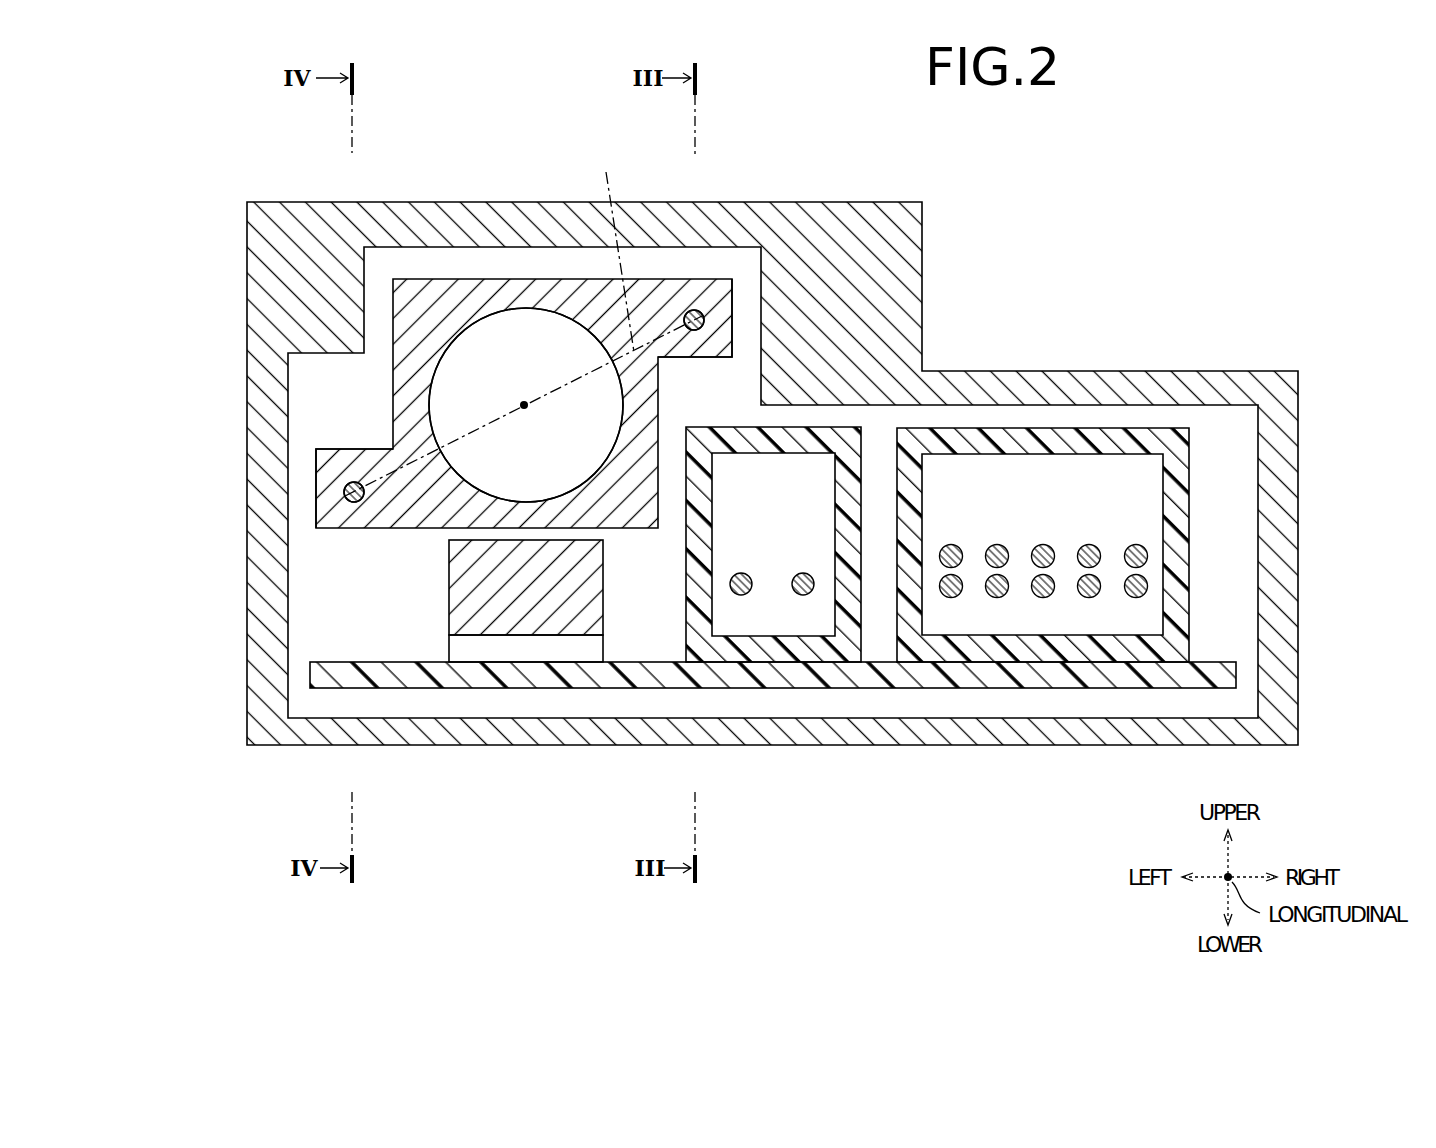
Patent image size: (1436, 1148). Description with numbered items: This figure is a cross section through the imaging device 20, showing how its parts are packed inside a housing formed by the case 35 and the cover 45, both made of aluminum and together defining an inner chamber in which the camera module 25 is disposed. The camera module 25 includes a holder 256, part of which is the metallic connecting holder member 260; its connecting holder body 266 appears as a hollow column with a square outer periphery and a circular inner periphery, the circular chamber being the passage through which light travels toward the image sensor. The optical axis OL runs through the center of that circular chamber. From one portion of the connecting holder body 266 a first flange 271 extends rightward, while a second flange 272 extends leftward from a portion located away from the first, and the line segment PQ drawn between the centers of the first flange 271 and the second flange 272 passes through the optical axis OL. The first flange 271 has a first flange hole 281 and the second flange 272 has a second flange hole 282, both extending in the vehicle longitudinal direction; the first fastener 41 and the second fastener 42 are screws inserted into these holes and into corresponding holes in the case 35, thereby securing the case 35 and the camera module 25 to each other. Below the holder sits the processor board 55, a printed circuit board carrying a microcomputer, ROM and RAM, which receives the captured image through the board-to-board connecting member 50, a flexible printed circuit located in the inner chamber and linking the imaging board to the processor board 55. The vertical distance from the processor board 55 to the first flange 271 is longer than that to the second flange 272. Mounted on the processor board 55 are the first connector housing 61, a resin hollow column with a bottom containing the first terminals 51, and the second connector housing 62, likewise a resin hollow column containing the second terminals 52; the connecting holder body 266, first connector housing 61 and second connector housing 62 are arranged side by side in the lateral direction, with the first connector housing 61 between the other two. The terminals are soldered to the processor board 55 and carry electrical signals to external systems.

The imaging device 20 is at (772, 473).
The case 35 is at (772, 473).
The cover 45 is at (467, 737).
The camera module 25 is at (524, 315).
The holder 256 is at (524, 315).
The connecting holder body 266 is at (575, 292).
The connecting holder member 260 is at (535, 310).
The optical axis OL is at (524, 402).
The line segment PQ is at (617, 237).
The first fastener 41 is at (713, 234).
The second fastener 42 is at (261, 458).
The first flange hole 281 is at (700, 313).
The second flange hole 282 is at (344, 488).
The first flange 271 is at (725, 305).
The second flange 272 is at (330, 460).
The board-to-board connecting member 50 is at (523, 618).
The processor board 55 is at (582, 677).
The first terminals 51 is at (742, 596).
The first connector housing 61 is at (806, 650).
The second terminals 52 is at (1046, 598).
The second connector housing 62 is at (1103, 657).